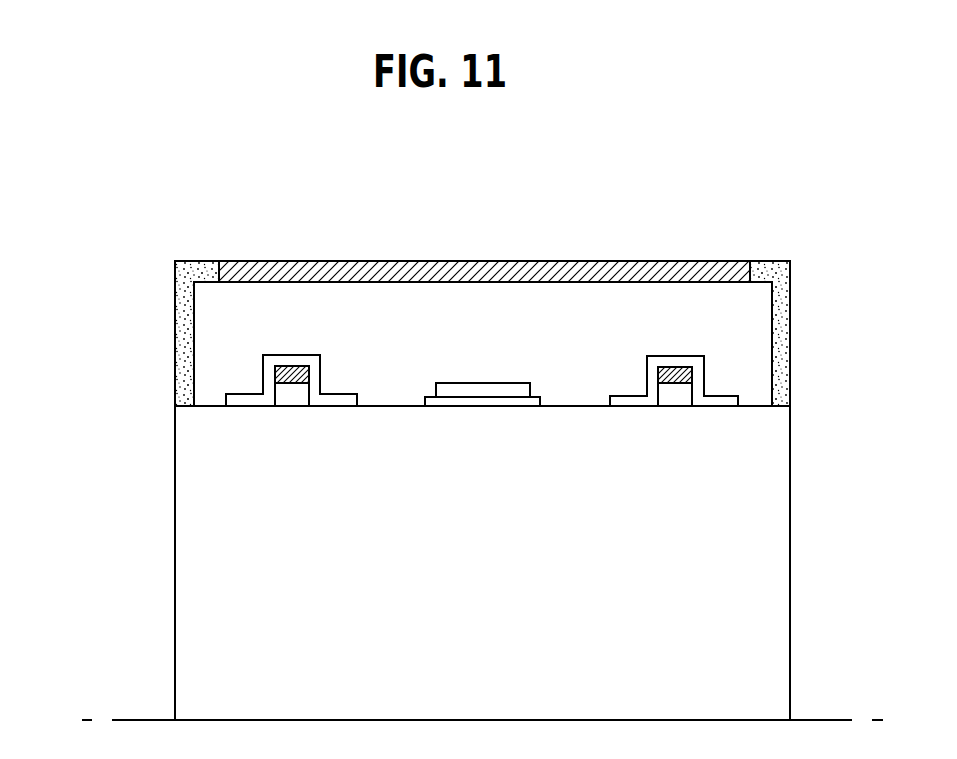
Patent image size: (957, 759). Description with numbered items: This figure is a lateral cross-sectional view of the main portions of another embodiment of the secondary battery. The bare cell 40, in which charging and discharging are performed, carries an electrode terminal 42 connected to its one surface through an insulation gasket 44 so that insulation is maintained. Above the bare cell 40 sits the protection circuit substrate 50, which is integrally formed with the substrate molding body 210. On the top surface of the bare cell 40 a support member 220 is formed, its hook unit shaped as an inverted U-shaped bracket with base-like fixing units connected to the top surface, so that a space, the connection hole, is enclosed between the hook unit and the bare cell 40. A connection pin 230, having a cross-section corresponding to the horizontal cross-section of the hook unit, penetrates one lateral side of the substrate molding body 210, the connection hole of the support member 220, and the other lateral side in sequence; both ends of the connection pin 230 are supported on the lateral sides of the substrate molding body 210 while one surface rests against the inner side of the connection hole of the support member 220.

The bare cell 40 is at (186, 544).
The electrode terminal 42 is at (458, 391).
The insulation gasket 44 is at (503, 403).
The protection circuit substrate 50 is at (622, 272).
The substrate molding body 210 is at (181, 288).
The support member 220 is at (325, 350).
The connection pin 230 is at (677, 368).